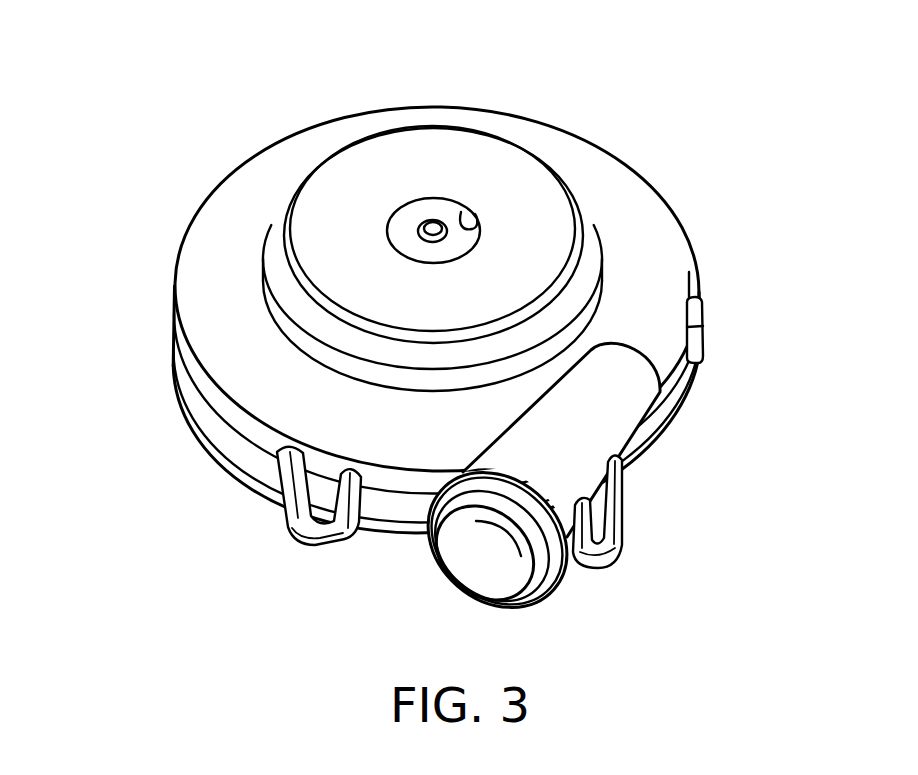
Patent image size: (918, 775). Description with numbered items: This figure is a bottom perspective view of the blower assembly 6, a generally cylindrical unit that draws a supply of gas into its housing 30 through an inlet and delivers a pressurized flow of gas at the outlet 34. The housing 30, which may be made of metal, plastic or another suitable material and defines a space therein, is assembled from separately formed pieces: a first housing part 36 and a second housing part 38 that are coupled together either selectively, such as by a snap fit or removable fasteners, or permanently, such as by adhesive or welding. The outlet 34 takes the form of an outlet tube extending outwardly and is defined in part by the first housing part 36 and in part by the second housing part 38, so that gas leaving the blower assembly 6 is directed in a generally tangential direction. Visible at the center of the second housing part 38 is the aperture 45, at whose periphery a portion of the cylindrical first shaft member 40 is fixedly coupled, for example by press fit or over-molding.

The blower assembly 6 is at (160, 102).
The housing 30 is at (157, 306).
The outlet 34 is at (488, 561).
The first housing part 36 is at (259, 490).
The second housing part 38 is at (345, 195).
The first shaft member 40 is at (428, 208).
The aperture 45 is at (461, 212).